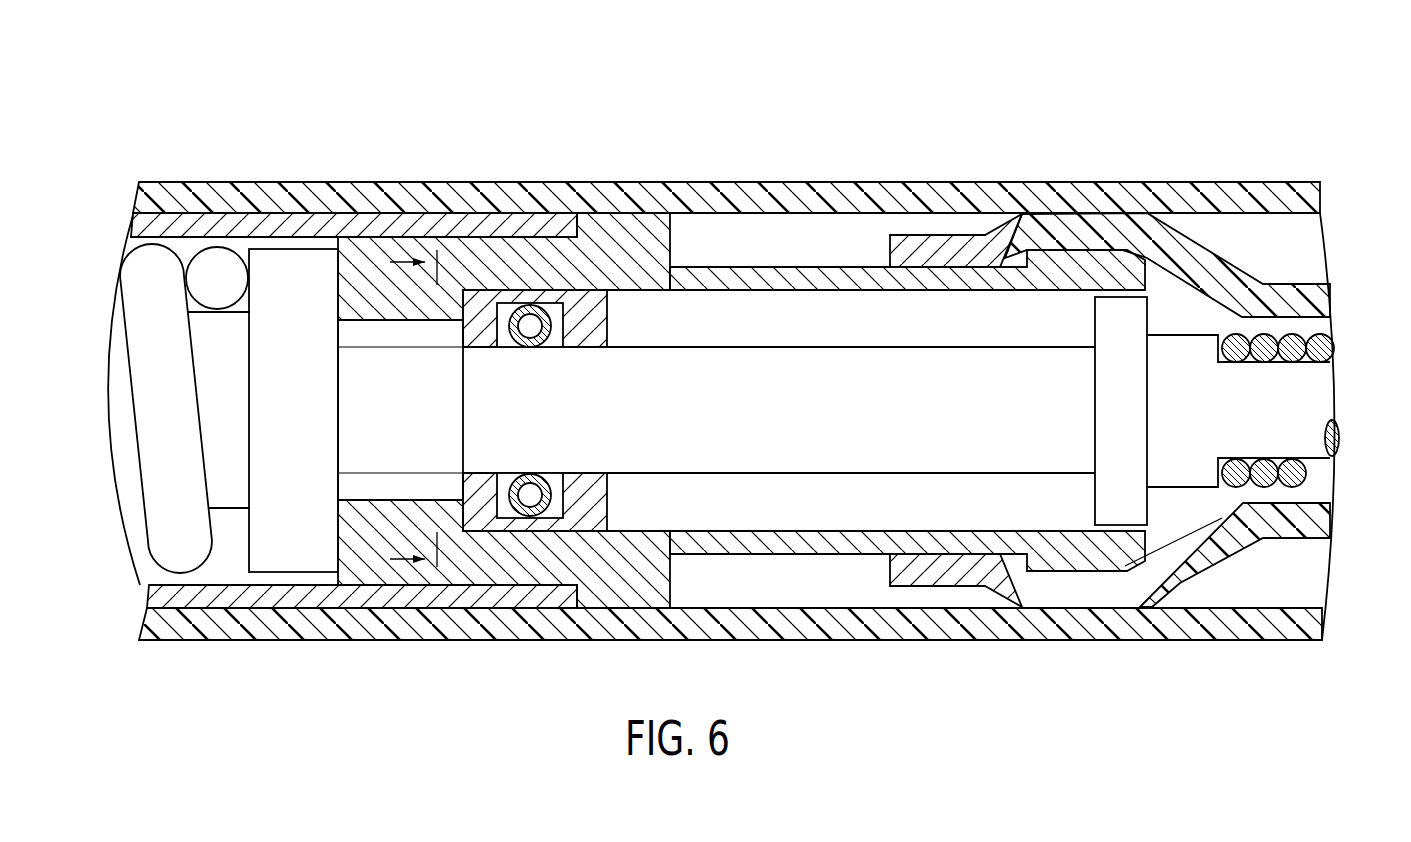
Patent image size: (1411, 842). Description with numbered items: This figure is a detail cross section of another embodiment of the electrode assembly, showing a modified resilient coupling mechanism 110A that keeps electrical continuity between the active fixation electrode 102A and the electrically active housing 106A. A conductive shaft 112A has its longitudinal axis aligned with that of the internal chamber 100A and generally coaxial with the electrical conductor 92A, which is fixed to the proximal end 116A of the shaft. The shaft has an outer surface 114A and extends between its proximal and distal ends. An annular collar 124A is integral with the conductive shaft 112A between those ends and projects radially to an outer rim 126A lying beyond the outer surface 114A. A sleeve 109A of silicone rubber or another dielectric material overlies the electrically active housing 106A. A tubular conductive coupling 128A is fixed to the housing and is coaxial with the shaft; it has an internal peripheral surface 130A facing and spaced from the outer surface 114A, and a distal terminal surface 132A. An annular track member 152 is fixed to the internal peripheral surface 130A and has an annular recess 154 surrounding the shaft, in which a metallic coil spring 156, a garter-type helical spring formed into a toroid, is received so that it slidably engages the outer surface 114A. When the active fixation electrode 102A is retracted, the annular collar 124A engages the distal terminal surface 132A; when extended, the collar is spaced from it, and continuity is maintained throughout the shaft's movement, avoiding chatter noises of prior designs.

The resilient coupling mechanism 110A is at (434, 107).
The sleeve 109A is at (588, 185).
The internal chamber 100A is at (700, 594).
The electrically active housing 106A is at (412, 600).
The tubular conductive coupling 128A is at (499, 247).
The internal peripheral surface 130A is at (856, 291).
The electrical conductor 92A is at (1333, 341).
The active fixation electrode 102A is at (133, 245).
The annular collar 124A is at (258, 570).
The distal terminal surface 132A is at (334, 570).
The outer rim 126A is at (281, 247).
The conductive shaft 112A is at (374, 342).
The outer surface 114A is at (757, 346).
The annular track member 152 is at (606, 328).
The metallic coil spring 156 is at (552, 322).
The annular recess 154 is at (558, 488).
The proximal end 116A is at (1318, 458).